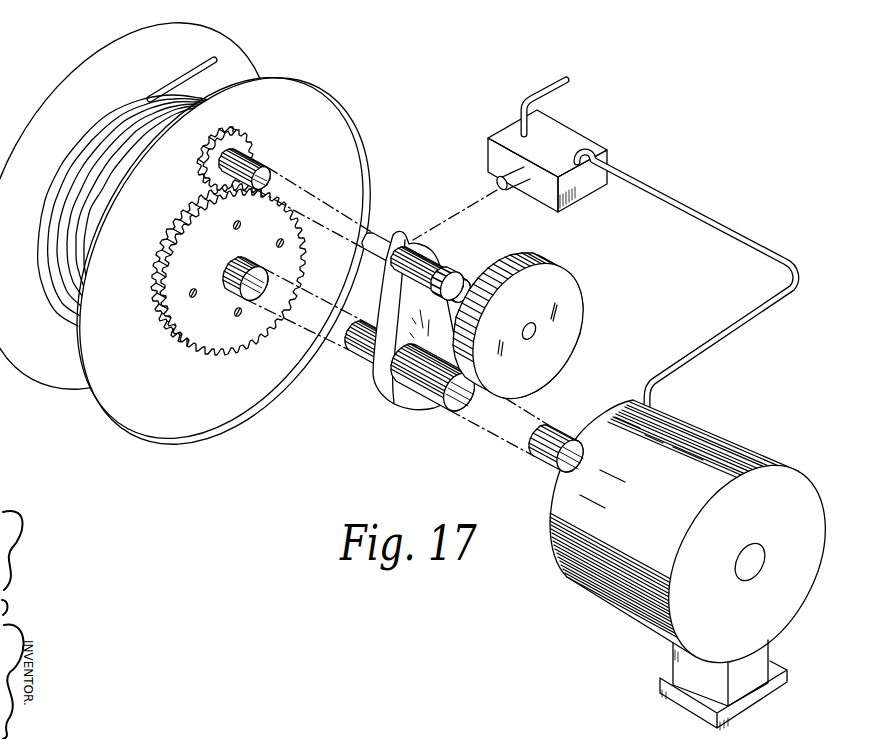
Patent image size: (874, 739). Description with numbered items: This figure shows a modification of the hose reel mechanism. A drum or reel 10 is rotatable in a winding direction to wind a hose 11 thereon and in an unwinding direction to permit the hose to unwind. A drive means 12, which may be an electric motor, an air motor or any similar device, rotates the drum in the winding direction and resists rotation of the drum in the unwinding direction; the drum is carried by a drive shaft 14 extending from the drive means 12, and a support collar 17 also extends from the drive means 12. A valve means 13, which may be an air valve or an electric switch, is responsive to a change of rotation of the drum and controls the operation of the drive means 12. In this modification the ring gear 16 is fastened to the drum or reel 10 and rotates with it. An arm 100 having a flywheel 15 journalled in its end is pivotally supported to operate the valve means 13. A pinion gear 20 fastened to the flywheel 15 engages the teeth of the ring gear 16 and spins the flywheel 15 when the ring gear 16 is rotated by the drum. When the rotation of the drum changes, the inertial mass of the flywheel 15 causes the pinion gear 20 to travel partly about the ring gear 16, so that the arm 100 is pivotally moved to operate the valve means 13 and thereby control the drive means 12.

The drum or reel 10 is at (217, 425).
The hose 11 is at (215, 58).
The drive means 12 is at (565, 495).
The valve means 13 is at (505, 132).
The drive shaft 14 is at (360, 362).
The flywheel 15 is at (577, 272).
The ring gear 16 is at (198, 345).
The support collar 17 is at (400, 404).
The pinion gear 20 is at (248, 141).
The arm 100 is at (392, 298).